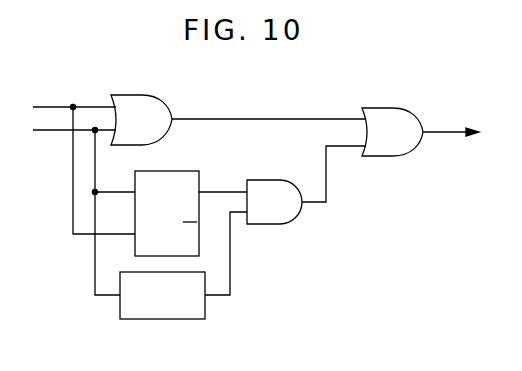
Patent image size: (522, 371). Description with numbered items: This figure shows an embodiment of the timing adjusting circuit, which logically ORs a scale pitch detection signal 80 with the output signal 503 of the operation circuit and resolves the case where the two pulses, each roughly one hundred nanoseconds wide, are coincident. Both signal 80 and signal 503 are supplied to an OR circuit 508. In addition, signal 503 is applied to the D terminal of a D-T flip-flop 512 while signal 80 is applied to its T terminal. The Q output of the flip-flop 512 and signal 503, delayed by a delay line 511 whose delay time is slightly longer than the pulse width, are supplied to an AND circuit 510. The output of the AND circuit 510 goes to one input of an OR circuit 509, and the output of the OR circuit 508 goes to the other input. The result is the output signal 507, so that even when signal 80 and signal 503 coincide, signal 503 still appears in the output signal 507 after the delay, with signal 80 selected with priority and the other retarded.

The scale pitch detection signal 80 is at (46, 105).
The output signal of the operation circuit 503 is at (46, 132).
The OR circuit 508 is at (161, 88).
The OR circuit 509 is at (409, 108).
The output signal of the timing adjusting circuit 507 is at (452, 132).
The AND circuit 510 is at (288, 222).
The delay line 511 is at (205, 303).
The D-T flip-flop 512 is at (180, 152).